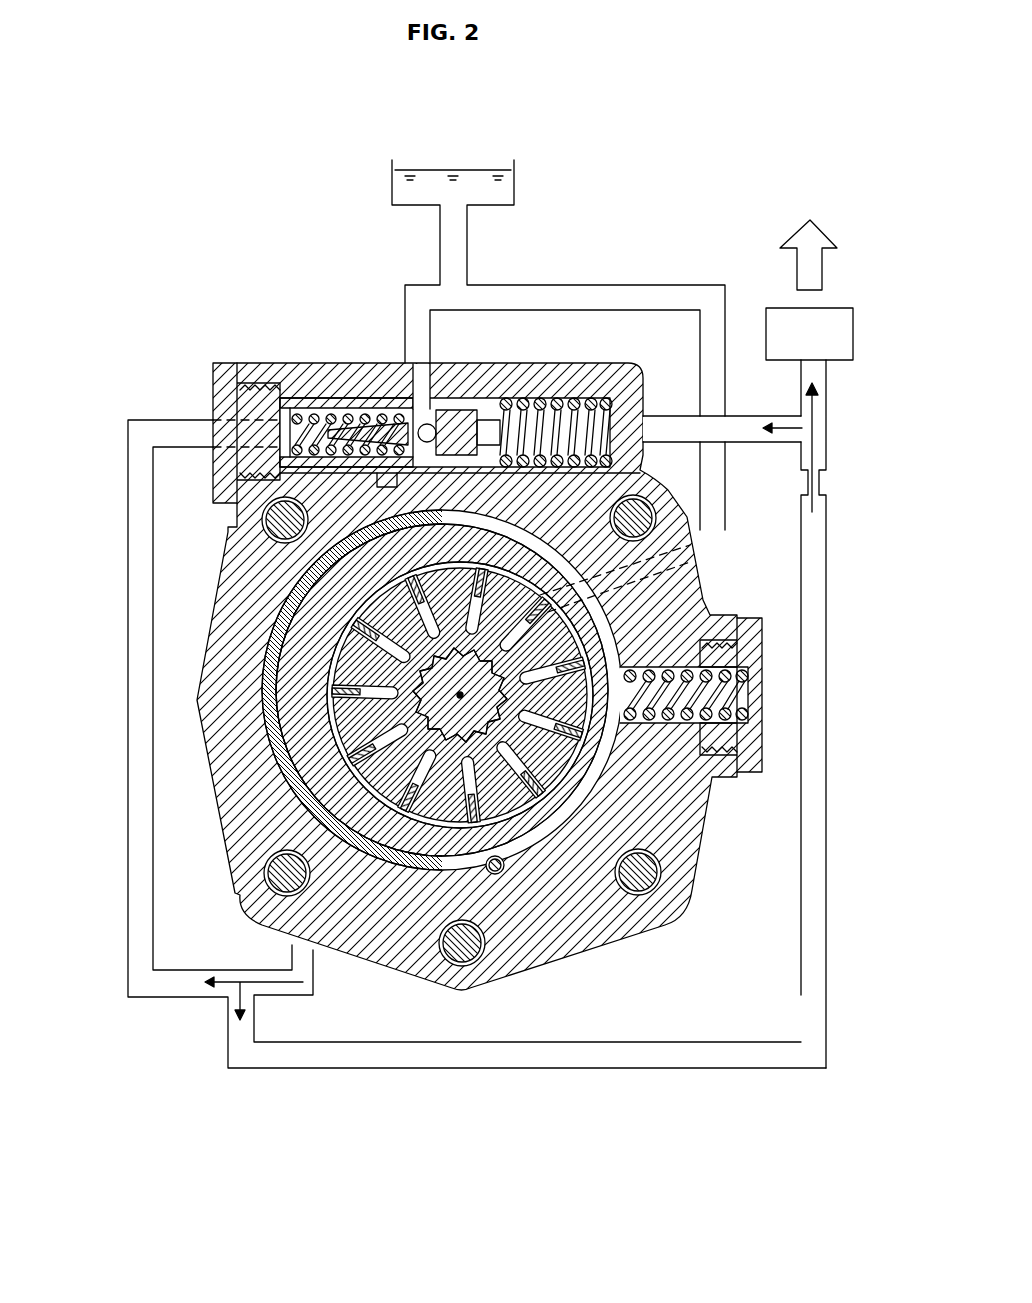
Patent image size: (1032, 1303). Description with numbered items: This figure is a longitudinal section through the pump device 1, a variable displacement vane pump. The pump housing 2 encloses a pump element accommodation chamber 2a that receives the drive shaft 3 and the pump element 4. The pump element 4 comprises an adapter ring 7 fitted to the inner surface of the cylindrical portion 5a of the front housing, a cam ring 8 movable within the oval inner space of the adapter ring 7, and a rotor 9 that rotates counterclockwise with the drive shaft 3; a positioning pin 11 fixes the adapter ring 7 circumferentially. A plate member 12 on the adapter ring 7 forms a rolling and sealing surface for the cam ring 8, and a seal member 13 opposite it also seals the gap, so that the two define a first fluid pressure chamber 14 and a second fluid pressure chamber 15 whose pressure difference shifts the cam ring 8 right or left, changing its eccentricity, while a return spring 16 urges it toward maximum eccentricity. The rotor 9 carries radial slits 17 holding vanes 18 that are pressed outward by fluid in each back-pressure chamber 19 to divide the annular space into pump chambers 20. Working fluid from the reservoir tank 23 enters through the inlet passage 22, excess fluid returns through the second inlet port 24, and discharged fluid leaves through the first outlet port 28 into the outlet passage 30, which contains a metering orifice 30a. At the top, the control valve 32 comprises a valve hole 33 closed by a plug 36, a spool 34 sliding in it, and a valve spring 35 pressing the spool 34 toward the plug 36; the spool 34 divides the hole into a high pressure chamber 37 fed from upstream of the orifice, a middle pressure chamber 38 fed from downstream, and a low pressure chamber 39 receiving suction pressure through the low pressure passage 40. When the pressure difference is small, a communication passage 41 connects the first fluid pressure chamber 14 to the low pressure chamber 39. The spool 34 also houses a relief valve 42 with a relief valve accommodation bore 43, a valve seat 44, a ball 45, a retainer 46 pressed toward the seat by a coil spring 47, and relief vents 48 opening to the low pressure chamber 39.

The pump device 1 is at (646, 365).
The pump housing 2 is at (712, 556).
The pump element accommodation chamber 2a is at (543, 887).
The drive shaft 3 is at (656, 885).
The pump element 4 is at (310, 600).
The cylindrical portion 5a is at (685, 828).
The adapter ring 7 is at (627, 632).
The cam ring 8 is at (340, 930).
The rotor 9 is at (330, 765).
The positioning pin 11 is at (500, 874).
The plate member 12 is at (445, 880).
The seal member 13 is at (652, 500).
The first fluid pressure chamber 14 is at (262, 565).
The second fluid pressure chamber 15 is at (690, 640).
The return spring 16 is at (748, 714).
The slits 17 is at (320, 680).
The vanes 18 is at (265, 700).
The back-pressure chamber 19 is at (266, 618).
The pump chambers 20 is at (350, 790).
The inlet passage 22 is at (717, 283).
The reservoir tank 23 is at (512, 183).
The second inlet port 24 is at (322, 640).
The first outlet port 28 is at (395, 870).
The outlet passage 30 is at (660, 1068).
The metering orifice 30a is at (822, 478).
The control valve 32 is at (330, 398).
The valve hole 33 is at (570, 398).
The spool 34 is at (390, 398).
The valve spring 35 is at (603, 398).
The plug 36 is at (213, 390).
The high pressure chamber 37 is at (305, 396).
The middle pressure chamber 38 is at (628, 410).
The low pressure chamber 39 is at (466, 408).
The low pressure passage 40 is at (403, 298).
The communication passage 41 is at (237, 515).
The relief valve 42 is at (503, 350).
The relief valve accommodation bore 43 is at (470, 420).
The valve seat 44 is at (490, 432).
The ball 45 is at (425, 422).
The retainer 46 is at (360, 428).
The coil spring 47 is at (320, 415).
The relief vents 48 is at (445, 405).